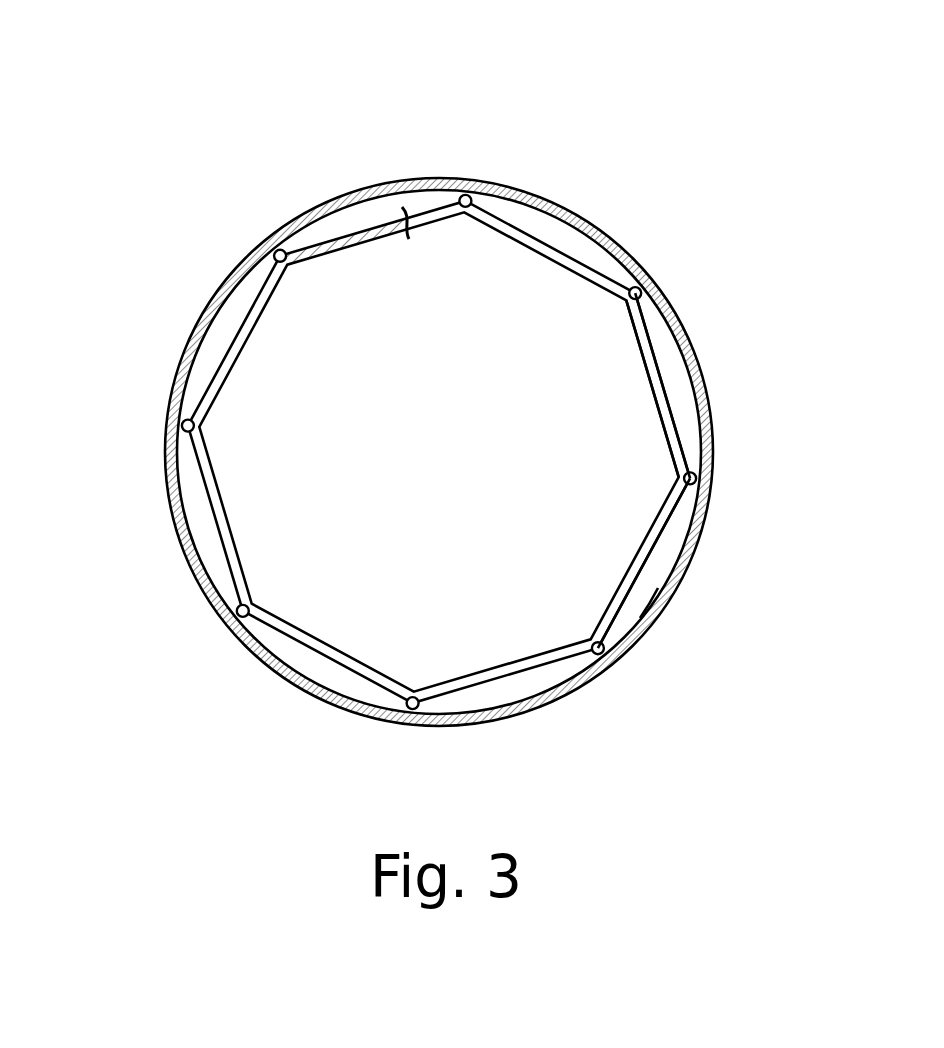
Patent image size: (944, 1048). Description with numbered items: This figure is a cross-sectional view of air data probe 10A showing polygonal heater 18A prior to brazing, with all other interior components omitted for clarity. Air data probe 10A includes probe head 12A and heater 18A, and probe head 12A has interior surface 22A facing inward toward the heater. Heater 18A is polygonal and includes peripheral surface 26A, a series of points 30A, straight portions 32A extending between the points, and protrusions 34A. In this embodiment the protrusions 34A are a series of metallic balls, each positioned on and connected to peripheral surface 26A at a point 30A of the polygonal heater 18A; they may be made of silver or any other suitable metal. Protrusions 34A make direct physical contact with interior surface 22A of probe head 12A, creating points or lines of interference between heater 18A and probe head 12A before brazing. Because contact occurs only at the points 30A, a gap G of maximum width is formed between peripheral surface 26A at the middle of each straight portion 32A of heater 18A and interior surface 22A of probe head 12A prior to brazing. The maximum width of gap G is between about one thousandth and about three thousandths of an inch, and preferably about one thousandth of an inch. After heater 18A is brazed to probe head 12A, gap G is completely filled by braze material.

The air data probe 10A is at (140, 99).
The probe head 12A is at (688, 557).
The polygonal heater 18A is at (662, 395).
The interior surface 22A is at (655, 615).
The peripheral surface 26A is at (687, 410).
The points 30A is at (626, 299).
The straight portions 32A is at (647, 340).
The protrusions 34A is at (643, 289).
The gap G is at (517, 295).